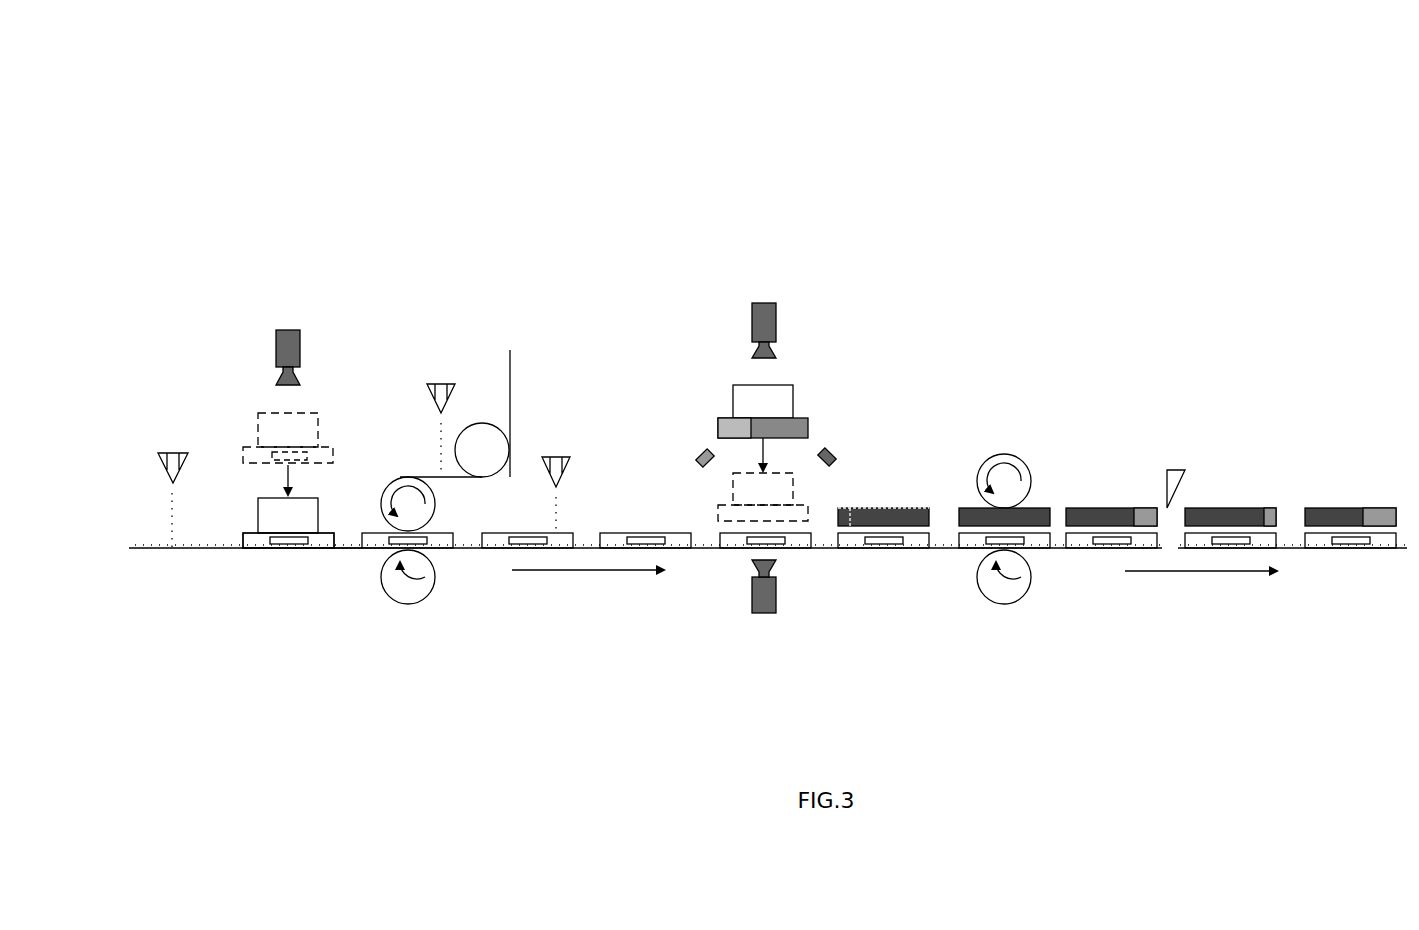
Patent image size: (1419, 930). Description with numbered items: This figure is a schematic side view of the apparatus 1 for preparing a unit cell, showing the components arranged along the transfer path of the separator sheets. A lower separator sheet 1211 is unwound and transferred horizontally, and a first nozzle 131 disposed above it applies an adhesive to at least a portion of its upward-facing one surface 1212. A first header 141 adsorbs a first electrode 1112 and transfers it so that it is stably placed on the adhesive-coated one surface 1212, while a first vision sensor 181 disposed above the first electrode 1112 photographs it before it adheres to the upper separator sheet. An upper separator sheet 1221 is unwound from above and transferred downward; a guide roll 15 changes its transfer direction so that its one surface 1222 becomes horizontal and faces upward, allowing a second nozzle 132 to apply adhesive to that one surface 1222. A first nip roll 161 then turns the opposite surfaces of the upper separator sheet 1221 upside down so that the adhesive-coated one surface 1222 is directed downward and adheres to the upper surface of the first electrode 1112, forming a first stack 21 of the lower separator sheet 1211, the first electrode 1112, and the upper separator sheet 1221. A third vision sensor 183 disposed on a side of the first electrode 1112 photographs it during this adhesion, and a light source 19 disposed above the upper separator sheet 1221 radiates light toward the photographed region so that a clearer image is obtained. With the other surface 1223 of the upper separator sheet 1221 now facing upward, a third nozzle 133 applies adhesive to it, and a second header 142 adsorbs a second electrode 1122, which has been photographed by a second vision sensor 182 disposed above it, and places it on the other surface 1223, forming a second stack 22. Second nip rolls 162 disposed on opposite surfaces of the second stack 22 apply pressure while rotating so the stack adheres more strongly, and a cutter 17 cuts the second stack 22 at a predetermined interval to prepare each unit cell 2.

The apparatus for preparing a unit cell 1 is at (907, 223).
The unit cell 2 is at (1353, 508).
The guide roll 15 is at (480, 458).
The cutter 17 is at (1175, 468).
The light source 19 is at (828, 445).
The first stack 21 is at (594, 503).
The second stack 22 is at (884, 495).
The first nozzle 131 is at (172, 450).
The second nozzle 132 is at (440, 383).
The third nozzle 133 is at (557, 457).
The first header 141 is at (263, 513).
The second header 142 is at (790, 403).
The first nip roll 161 is at (414, 568).
The second nip roll 162 is at (1012, 563).
The first vision sensor 181 is at (290, 327).
The second vision sensor 182 is at (763, 303).
The third vision sensor 183 is at (762, 617).
The first electrode 1112 is at (287, 550).
The second electrode 1122 is at (912, 500).
The lower separator sheet 1211 is at (196, 550).
The one surface of the lower separator sheet 1212 is at (348, 547).
The upper separator sheet 1221 is at (510, 363).
The one surface of the upper separator sheet 1222 is at (440, 477).
The other surface of the upper separator sheet 1223 is at (647, 530).